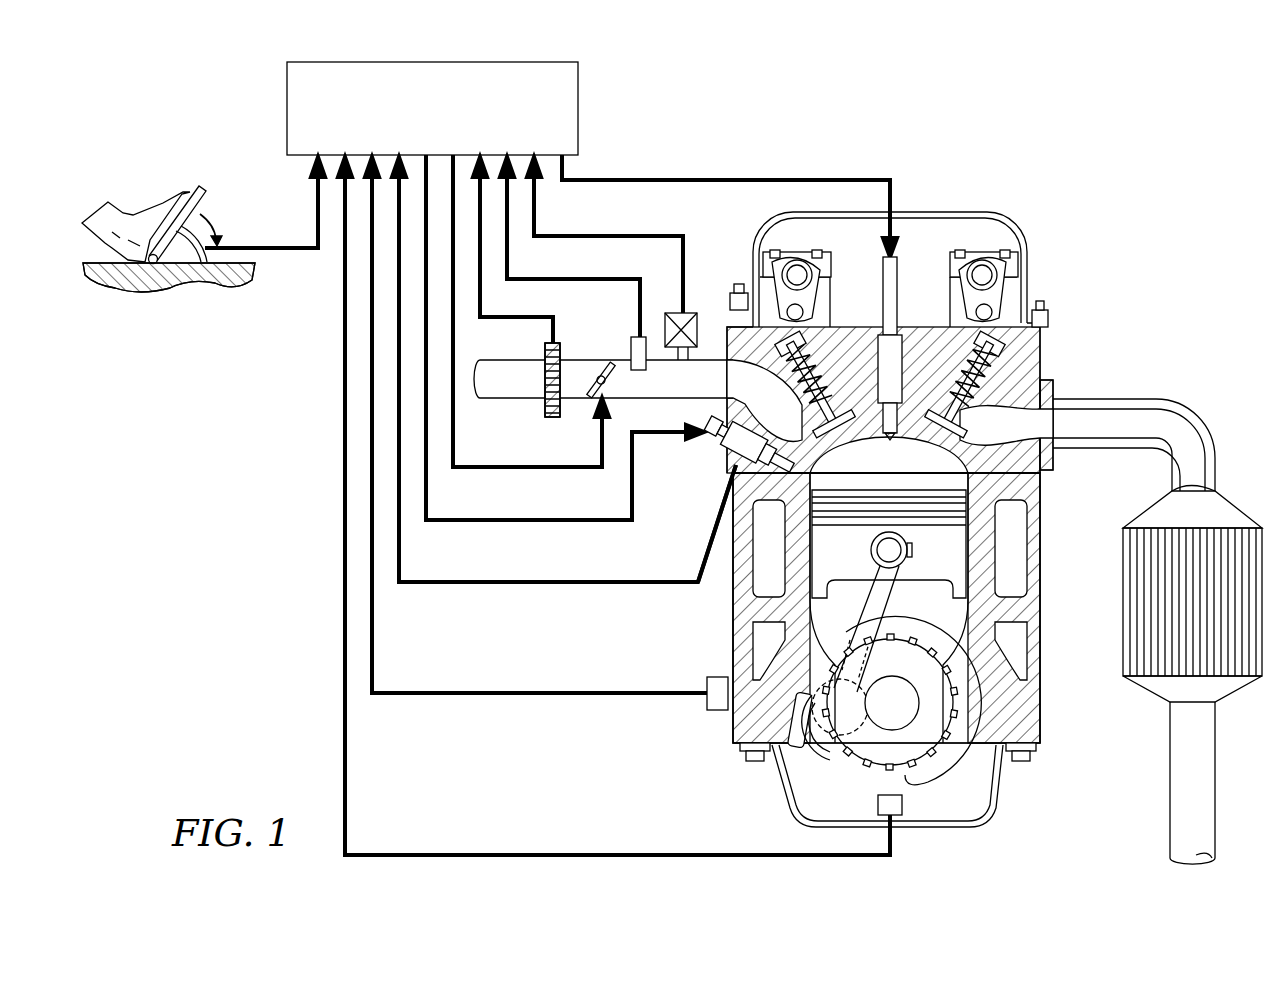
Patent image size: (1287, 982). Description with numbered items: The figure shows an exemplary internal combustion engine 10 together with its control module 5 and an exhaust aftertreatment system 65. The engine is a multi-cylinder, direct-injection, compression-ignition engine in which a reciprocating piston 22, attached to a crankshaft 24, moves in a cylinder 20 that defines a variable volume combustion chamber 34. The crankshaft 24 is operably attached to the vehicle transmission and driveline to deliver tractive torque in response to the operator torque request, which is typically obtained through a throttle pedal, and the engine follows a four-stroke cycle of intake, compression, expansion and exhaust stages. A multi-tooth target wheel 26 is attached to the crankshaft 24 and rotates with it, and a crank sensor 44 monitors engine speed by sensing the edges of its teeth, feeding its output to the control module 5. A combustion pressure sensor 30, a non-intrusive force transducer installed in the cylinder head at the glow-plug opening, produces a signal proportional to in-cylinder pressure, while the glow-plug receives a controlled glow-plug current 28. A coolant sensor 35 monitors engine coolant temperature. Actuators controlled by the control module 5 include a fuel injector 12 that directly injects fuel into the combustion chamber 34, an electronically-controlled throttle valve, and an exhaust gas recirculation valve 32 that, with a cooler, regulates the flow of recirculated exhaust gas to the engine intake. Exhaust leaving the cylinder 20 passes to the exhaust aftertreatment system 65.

The control module 5 is at (553, 72).
The internal combustion engine 10 is at (938, 516).
The fuel injector 12 is at (893, 268).
The cylinder 20 is at (1010, 440).
The piston 22 is at (858, 562).
The crankshaft 24 is at (968, 708).
The multi-tooth target wheel 26 is at (933, 723).
The glow-plug current 28 is at (662, 427).
The combustion pressure sensor 30 is at (665, 584).
The exhaust gas recirculation valve 32 is at (688, 310).
The combustion chamber 34 is at (901, 478).
The coolant sensor 35 is at (667, 695).
The crank sensor 44 is at (902, 805).
The exhaust aftertreatment system 65 is at (1235, 523).